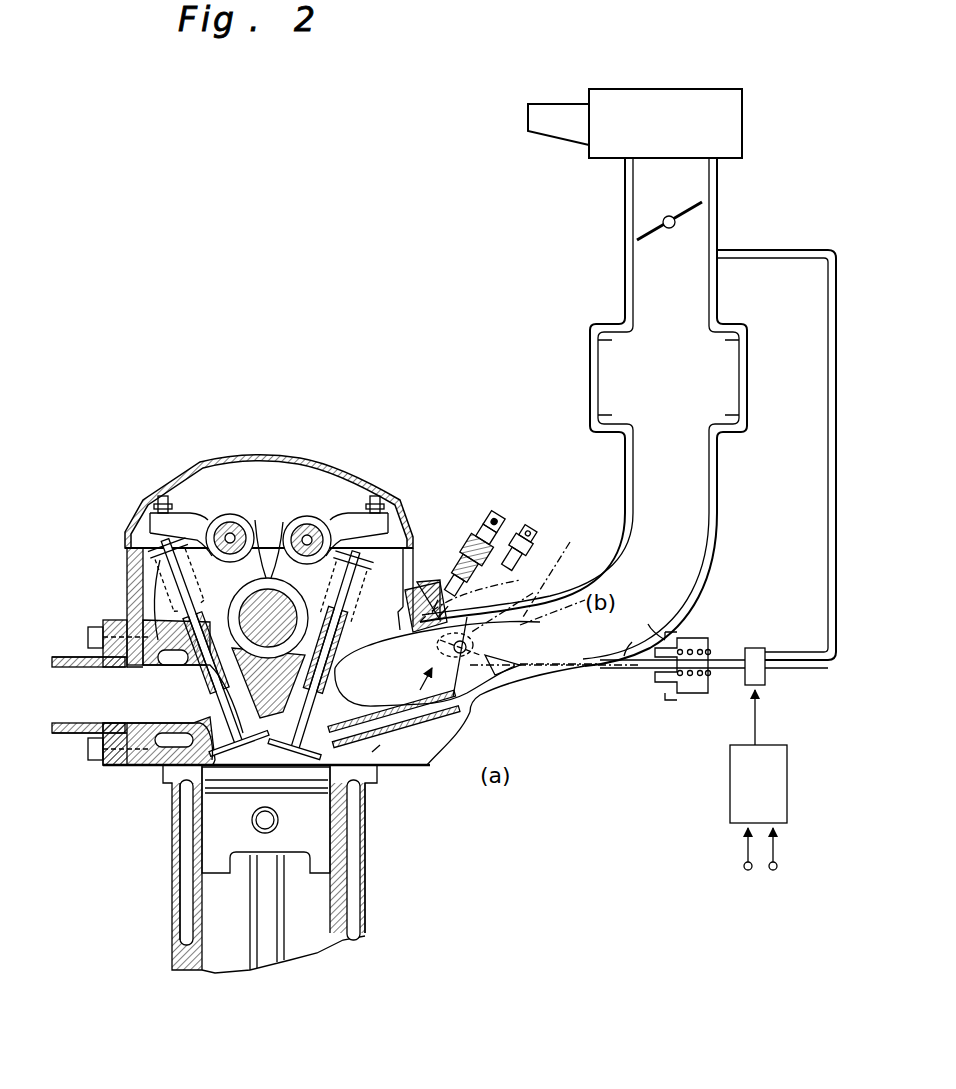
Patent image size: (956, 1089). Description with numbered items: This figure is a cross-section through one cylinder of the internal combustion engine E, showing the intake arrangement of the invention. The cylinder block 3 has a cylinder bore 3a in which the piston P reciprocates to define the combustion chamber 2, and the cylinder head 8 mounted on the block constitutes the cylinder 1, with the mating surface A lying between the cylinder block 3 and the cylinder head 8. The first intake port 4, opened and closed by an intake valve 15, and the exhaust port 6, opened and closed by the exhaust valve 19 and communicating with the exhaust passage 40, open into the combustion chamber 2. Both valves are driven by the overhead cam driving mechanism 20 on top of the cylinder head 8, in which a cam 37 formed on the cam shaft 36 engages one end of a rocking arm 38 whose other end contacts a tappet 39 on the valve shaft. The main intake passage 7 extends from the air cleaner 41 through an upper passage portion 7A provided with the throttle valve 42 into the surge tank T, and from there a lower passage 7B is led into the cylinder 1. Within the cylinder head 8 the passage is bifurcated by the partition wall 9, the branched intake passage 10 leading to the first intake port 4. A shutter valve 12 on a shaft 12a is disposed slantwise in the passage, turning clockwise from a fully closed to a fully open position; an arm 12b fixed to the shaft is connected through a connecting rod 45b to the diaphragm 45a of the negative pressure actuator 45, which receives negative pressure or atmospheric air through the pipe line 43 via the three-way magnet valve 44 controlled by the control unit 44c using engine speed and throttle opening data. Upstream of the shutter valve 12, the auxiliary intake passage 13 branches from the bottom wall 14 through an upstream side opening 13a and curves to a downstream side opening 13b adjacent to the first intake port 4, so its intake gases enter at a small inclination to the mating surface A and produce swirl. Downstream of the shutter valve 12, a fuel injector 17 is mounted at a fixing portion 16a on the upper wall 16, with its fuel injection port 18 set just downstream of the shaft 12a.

The cylinder 1 is at (163, 900).
The combustion chamber 2 is at (240, 850).
The cylinder block 3 is at (372, 905).
The cylinder bore 3a is at (313, 877).
The first intake port 4 is at (360, 768).
The exhaust port 6 is at (128, 770).
The main intake passage 7 is at (713, 460).
The upper passage portion 7A is at (625, 205).
The lower passage 7B is at (603, 676).
The cylinder head 8 is at (125, 593).
The partition wall 9 is at (440, 718).
The branched intake passage 10 is at (395, 740).
The shutter valve 12 is at (550, 587).
The shaft 12a is at (478, 693).
The arm 12b is at (568, 545).
The auxiliary intake passage 13 is at (437, 697).
The upstream side opening 13a is at (520, 663).
The downstream side opening 13b is at (372, 752).
The bottom wall 14 is at (497, 660).
The intake valve 15 is at (350, 880).
The upper wall 16 is at (423, 580).
The fixing portion 16a is at (443, 593).
The fuel injector 17 is at (497, 547).
The fuel injection port 18 is at (533, 593).
The exhaust valve 19 is at (163, 860).
The overhead cam driving mechanism 20 is at (273, 497).
The cam shaft 36 is at (267, 578).
The cam 37 is at (147, 647).
The rocking arm 38 is at (203, 507).
The tappet 39 is at (160, 580).
The exhaust passage 40 is at (72, 655).
The air cleaner 41 is at (684, 95).
The throttle valve 42 is at (712, 205).
The pipe line 43 is at (828, 250).
The three-way magnet valve 44 is at (768, 668).
The control unit 44c is at (735, 787).
The negative pressure actuator 45 is at (700, 637).
The diaphragm 45a is at (672, 637).
The connecting rod 45b is at (624, 657).
The mating surface A is at (163, 800).
The internal combustion engine E is at (163, 830).
The piston P is at (287, 833).
The surge tank T is at (725, 355).